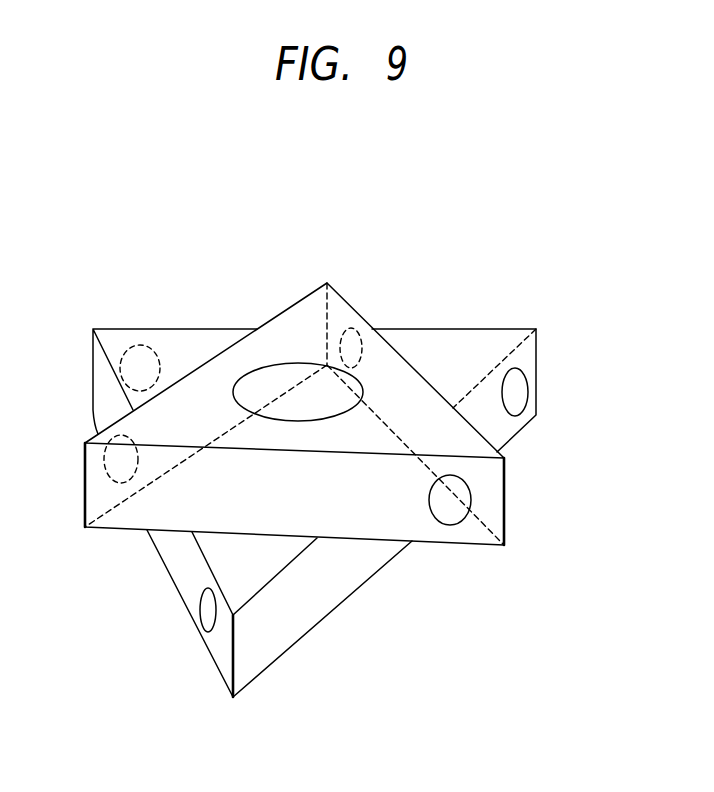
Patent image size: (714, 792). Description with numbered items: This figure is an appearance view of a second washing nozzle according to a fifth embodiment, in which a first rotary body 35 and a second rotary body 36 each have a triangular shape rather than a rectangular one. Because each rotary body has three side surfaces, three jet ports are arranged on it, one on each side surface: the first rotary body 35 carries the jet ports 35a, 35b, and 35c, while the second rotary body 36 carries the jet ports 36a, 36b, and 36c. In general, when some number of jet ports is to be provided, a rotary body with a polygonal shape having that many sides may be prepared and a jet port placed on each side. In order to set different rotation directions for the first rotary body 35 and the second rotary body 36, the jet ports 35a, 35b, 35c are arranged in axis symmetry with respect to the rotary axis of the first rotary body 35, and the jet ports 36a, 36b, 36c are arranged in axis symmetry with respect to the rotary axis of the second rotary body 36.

The first rotary body 35 is at (327, 587).
The jet port 35a is at (207, 608).
The jet port 35b is at (515, 392).
The jet port 35c is at (147, 347).
The second rotary body 36 is at (433, 530).
The jet port 36a is at (112, 462).
The jet port 36b is at (470, 495).
The jet port 36c is at (360, 340).